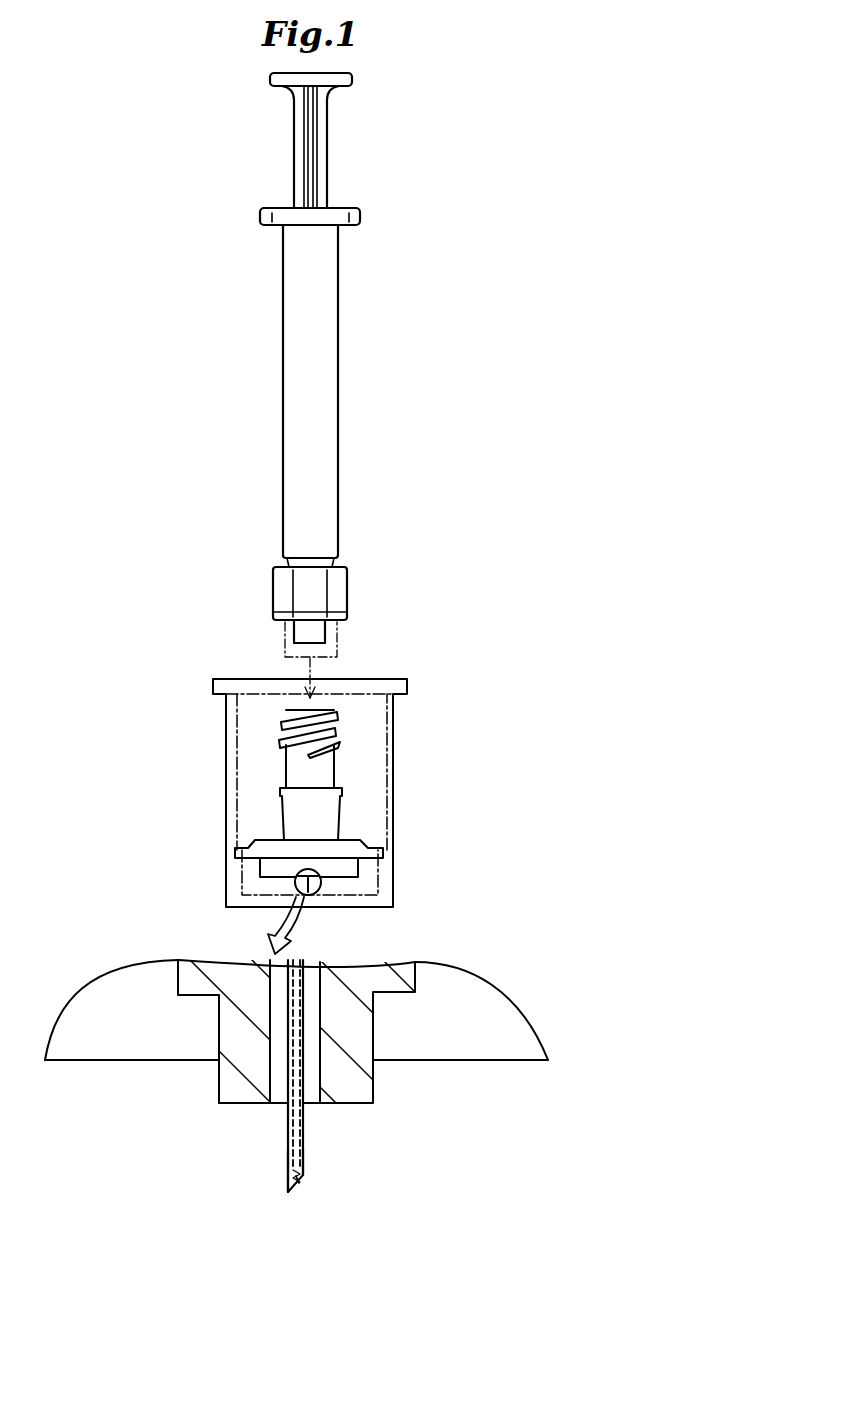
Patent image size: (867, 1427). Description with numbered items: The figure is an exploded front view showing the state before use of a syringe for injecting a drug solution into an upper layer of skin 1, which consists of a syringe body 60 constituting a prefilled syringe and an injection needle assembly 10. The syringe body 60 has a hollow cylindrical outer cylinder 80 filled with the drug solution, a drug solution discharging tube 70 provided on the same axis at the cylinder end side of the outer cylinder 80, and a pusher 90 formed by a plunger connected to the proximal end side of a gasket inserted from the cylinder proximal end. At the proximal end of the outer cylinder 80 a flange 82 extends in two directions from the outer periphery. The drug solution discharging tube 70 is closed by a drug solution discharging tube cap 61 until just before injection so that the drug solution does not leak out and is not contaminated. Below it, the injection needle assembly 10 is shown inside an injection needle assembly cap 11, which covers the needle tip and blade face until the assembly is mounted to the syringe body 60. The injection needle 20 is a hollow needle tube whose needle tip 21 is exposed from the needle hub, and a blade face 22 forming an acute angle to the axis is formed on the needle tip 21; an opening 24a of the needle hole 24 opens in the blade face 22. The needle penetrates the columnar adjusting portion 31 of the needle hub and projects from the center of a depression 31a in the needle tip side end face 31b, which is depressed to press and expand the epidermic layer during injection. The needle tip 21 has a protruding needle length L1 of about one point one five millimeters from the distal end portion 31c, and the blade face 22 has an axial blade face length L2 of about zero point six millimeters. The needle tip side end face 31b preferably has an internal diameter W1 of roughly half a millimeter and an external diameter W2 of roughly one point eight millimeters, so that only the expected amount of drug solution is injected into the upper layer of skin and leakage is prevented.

The syringe for injecting a drug solution into an upper layer of skin 1 is at (186, 146).
The syringe body 60 is at (150, 272).
The pusher 90 is at (292, 170).
The flange 82 is at (354, 218).
The outer cylinder 80 is at (281, 349).
The drug solution discharging tube 70 is at (280, 639).
The drug solution discharging tube cap 61 is at (326, 650).
The injection needle assembly cap 11 is at (394, 822).
The injection needle assembly 10 is at (281, 763).
The adjusting portion 31 is at (319, 1048).
The depression 31a is at (280, 1106).
The needle tip side end face 31b is at (232, 1106).
The distal end portion 31c is at (217, 1103).
The needle hole 24 is at (341, 1101).
The opening 24a is at (301, 1184).
The injection needle 20 is at (242, 1114).
The needle tip 21 is at (287, 1196).
The blade face 22 is at (298, 1187).
The internal diameter W1 is at (198, 1012).
The external diameter W2 is at (172, 1047).
The protruding needle length L1 is at (427, 1103).
The blade face length L2 is at (377, 1225).